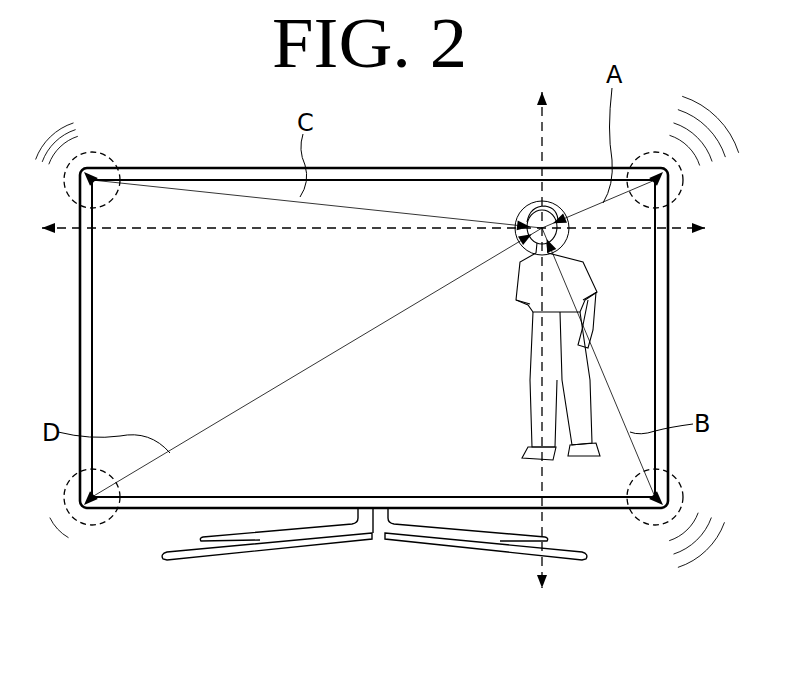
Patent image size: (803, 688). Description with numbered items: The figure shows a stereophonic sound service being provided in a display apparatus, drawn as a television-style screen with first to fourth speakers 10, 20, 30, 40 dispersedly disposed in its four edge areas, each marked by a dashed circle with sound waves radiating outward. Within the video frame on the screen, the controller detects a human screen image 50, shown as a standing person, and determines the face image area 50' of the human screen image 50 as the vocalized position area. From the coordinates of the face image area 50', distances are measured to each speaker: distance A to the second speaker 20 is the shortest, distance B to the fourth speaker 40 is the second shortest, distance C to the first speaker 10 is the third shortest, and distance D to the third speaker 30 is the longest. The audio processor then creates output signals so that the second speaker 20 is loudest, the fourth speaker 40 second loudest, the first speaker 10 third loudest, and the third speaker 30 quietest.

The first speaker 10 is at (98, 153).
The second speaker 20 is at (651, 153).
The third speaker 30 is at (92, 525).
The fourth speaker 40 is at (655, 525).
The human screen image 50 is at (614, 333).
The face image area 50' is at (557, 178).